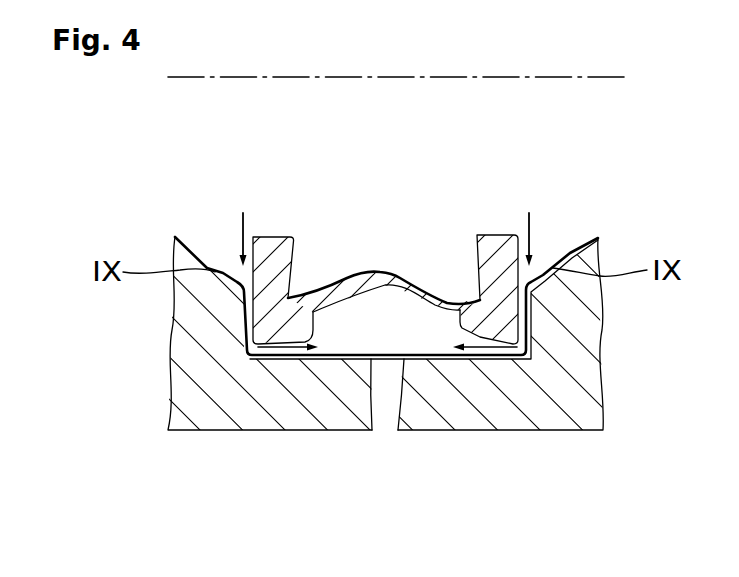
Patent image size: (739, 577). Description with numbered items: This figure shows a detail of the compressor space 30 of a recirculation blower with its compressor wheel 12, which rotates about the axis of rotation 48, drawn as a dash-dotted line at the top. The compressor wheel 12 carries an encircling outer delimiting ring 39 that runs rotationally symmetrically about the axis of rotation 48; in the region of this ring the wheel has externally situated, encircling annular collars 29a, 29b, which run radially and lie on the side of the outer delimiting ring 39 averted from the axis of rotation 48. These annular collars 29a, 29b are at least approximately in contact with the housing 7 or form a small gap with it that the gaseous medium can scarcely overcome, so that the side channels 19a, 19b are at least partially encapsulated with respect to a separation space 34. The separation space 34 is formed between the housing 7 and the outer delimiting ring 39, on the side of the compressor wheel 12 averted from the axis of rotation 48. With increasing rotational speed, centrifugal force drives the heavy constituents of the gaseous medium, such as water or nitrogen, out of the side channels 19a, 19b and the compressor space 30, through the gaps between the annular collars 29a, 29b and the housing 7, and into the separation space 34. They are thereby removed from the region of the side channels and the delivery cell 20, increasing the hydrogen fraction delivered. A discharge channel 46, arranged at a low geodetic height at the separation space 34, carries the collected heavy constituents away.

The housing 7 is at (183, 393).
The compressor wheel 12 is at (495, 240).
The side channel 19a is at (211, 242).
The side channel 19b is at (558, 242).
The delivery cell 20 is at (380, 218).
The annular collar 29a is at (258, 327).
The annular collar 29b is at (515, 327).
The compressor space 30 is at (346, 190).
The separation space 34 is at (437, 300).
The outer delimiting ring 39 is at (322, 280).
The discharge channel 46 is at (387, 420).
The axis of rotation 48 is at (369, 78).